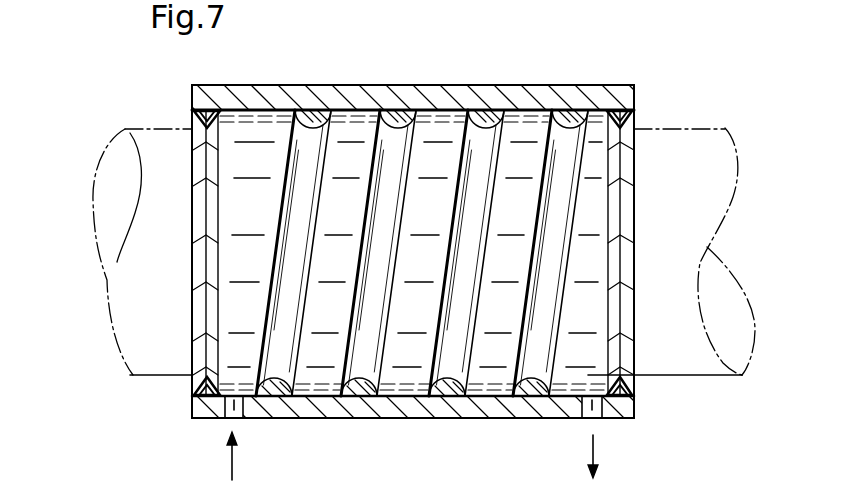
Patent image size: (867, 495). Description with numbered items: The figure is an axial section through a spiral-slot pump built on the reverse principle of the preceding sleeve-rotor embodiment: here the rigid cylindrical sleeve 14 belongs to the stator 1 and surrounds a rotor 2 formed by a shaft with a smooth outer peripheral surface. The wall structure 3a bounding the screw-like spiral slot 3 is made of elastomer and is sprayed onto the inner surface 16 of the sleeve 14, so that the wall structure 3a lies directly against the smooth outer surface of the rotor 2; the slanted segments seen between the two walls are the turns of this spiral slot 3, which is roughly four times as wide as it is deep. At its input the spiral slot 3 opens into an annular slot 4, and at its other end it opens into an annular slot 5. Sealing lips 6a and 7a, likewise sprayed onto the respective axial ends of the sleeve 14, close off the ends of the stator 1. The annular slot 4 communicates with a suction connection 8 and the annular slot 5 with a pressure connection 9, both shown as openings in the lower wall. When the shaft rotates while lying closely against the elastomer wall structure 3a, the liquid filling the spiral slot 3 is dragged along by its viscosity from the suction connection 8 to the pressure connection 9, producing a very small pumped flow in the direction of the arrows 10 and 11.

The stator 1 is at (582, 85).
The rotor 2 is at (115, 158).
The spiral slot 3 is at (525, 122).
The wall structure 3a is at (592, 110).
The annular slot 4 is at (240, 118).
The annular slot 5 is at (565, 388).
The sealing lip 6a is at (205, 113).
The sealing lip 7a is at (628, 113).
The suction connection 8 is at (230, 418).
The pressure connection 9 is at (593, 410).
The arrow 10 is at (232, 470).
The arrow 11 is at (593, 455).
The cylindrical sleeve 14 is at (357, 97).
The inner surface 16 is at (512, 333).